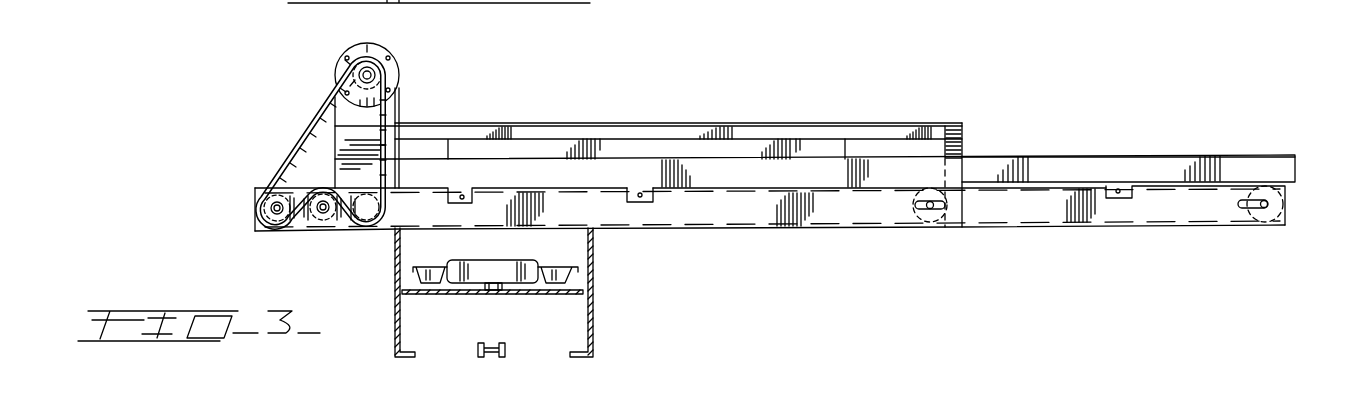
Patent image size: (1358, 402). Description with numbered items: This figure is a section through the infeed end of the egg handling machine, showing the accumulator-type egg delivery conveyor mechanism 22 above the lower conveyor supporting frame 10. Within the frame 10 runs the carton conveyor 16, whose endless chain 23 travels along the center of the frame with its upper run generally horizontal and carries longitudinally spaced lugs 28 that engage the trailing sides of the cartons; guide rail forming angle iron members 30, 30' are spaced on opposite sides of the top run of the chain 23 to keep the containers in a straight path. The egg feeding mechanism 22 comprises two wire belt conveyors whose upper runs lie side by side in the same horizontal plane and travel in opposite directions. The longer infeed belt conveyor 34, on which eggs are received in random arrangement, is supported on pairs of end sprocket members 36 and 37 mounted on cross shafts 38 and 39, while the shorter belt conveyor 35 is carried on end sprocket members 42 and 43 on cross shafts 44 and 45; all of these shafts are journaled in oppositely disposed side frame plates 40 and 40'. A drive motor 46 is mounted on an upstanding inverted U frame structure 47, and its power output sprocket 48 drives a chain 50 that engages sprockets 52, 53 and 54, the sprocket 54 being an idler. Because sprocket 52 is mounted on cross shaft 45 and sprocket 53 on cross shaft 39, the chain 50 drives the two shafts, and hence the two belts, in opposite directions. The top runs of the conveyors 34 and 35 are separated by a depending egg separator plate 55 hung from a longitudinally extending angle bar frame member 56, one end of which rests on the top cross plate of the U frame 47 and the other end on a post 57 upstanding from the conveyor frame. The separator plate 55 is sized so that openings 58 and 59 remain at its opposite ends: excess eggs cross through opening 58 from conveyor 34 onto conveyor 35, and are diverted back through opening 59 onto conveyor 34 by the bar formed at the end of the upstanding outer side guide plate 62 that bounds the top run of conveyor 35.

The lower conveyor supporting frame 10 is at (607, 309).
The conveyor 16 is at (505, 291).
The accumulator-type egg delivery conveyor mechanism 22 is at (1025, 146).
The endless chain 23 is at (478, 296).
The lugs 28 is at (527, 262).
The guide rail forming angle iron member 30 is at (396, 281).
The guide rail forming angle iron member 30' is at (592, 264).
The infeed belt conveyor 34 is at (1157, 182).
The belt conveyor 35 is at (745, 228).
The end sprocket members 36 is at (1244, 226).
The end sprocket members 37 is at (388, 185).
The cross shaft 38 is at (1282, 204).
The cross shaft 39 is at (323, 219).
The side frame plate 40 is at (772, 226).
The side frame plate 40' is at (1077, 226).
The end sprocket members 42 is at (923, 213).
The end sprocket members 43 is at (282, 225).
The cross shaft 44 is at (935, 210).
The cross shaft 45 is at (262, 212).
The drive motor 46 is at (378, 46).
The inverted U frame structure 47 is at (399, 104).
The power output sprocket 48 is at (348, 70).
The chain 50 is at (320, 110).
The sprocket 52 is at (268, 192).
The sprocket 53 is at (318, 191).
The idler sprocket 54 is at (384, 196).
The egg separator plate 55 is at (665, 150).
The angle bar frame member 56 is at (742, 131).
The post 57 is at (963, 135).
The opening 58 is at (436, 142).
The opening 59 is at (880, 146).
The outer side guide plate 62 is at (590, 178).